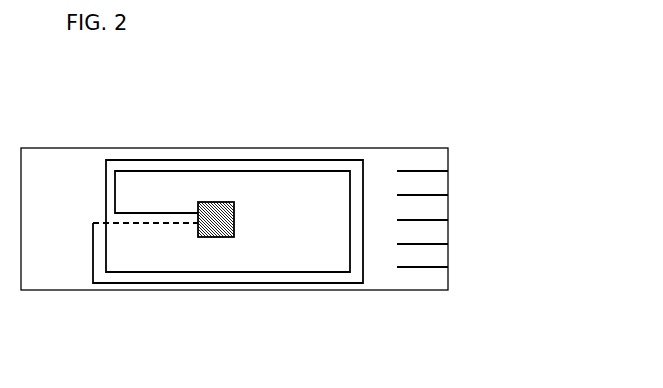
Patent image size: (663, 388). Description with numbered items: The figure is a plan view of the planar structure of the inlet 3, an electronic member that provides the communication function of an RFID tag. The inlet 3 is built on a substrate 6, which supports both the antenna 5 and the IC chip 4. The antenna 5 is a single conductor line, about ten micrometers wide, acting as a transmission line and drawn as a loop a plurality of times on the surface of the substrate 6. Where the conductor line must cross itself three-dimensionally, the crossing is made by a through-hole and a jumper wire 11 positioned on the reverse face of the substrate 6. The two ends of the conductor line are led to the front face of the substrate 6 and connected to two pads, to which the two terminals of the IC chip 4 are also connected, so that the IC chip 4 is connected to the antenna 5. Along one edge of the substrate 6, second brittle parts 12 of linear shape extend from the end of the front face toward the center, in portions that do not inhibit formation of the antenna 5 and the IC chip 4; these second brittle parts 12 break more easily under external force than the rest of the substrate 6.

The inlet 3 is at (50, 108).
The IC chip 4 is at (216, 202).
The antenna 5 is at (363, 252).
The substrate 6 is at (83, 158).
The jumper wire 11 is at (155, 226).
The second brittle parts 12 is at (432, 171).